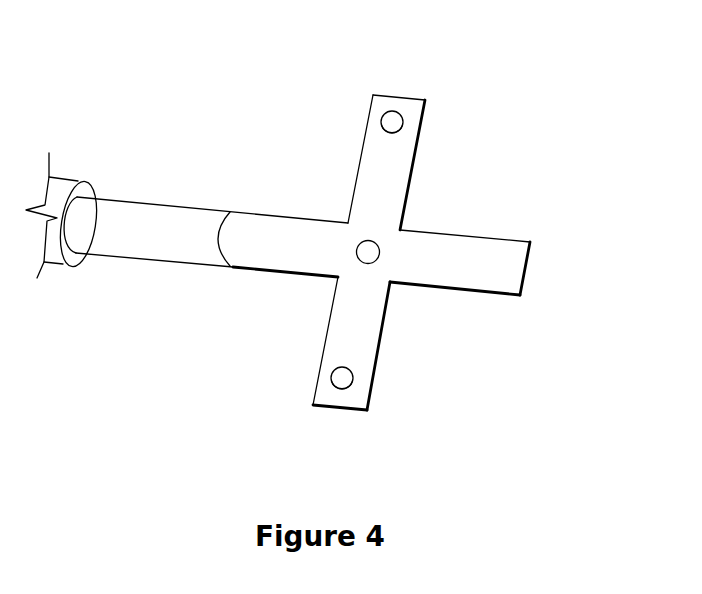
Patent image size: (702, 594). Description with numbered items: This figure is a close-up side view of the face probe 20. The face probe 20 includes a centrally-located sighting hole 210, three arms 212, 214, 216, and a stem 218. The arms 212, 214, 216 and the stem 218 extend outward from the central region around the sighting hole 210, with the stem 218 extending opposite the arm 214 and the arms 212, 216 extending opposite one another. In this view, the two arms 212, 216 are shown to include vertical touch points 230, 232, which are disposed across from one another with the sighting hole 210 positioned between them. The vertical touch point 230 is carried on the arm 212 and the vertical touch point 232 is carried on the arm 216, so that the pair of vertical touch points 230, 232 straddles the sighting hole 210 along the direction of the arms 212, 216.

The face probe 20 is at (313, 263).
The sighting hole 210 is at (371, 251).
The arm 212 is at (382, 98).
The arm 214 is at (530, 267).
The arm 216 is at (350, 412).
The stem 218 is at (265, 258).
The vertical touch point 230 is at (403, 122).
The vertical touch point 232 is at (353, 379).